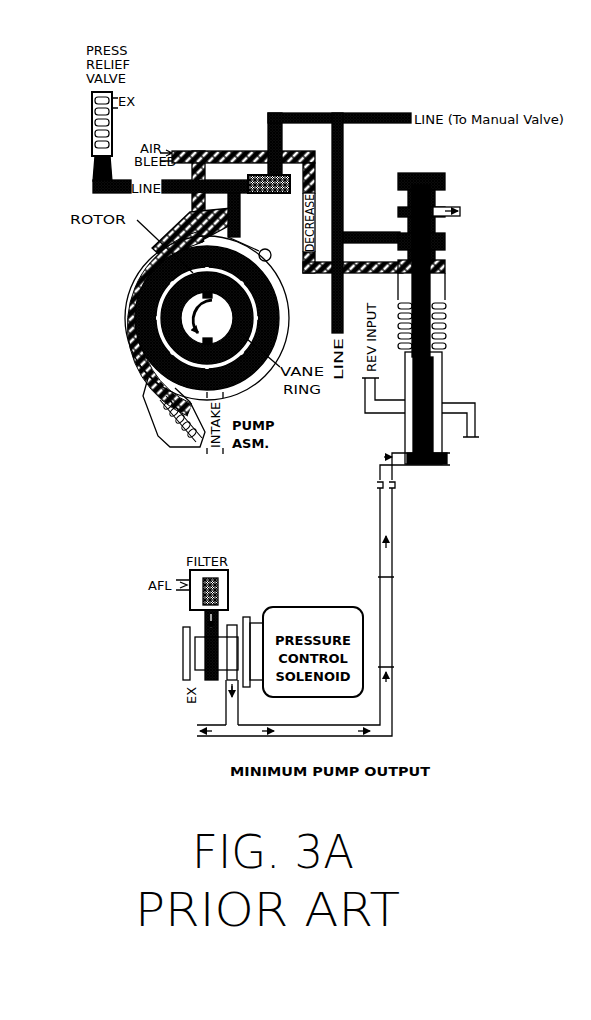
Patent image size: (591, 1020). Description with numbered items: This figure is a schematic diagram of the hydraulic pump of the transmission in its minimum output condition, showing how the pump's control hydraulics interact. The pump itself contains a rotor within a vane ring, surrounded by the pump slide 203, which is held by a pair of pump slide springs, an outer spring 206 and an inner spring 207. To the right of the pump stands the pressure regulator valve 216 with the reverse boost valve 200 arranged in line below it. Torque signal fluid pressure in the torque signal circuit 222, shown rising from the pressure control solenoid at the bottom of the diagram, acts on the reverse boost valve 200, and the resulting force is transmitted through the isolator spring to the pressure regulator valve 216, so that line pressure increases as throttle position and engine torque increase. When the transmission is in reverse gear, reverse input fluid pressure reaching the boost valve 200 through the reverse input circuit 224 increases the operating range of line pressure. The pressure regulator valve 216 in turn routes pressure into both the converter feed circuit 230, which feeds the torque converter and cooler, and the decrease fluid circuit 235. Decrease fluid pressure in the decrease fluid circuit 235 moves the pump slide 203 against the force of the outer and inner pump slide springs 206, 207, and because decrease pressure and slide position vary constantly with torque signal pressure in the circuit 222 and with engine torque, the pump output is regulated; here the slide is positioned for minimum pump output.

The reverse boost valve 200 is at (458, 389).
The pump slide 203 is at (132, 352).
The outer pump slide spring 206 is at (182, 455).
The inner pump slide spring 207 is at (162, 414).
The pressure regulator valve 216 is at (489, 265).
The torque signal circuit 222 is at (392, 697).
The reverse input circuit 224 is at (474, 426).
The converter feed circuit 230 is at (506, 226).
The decrease fluid circuit 235 is at (247, 150).